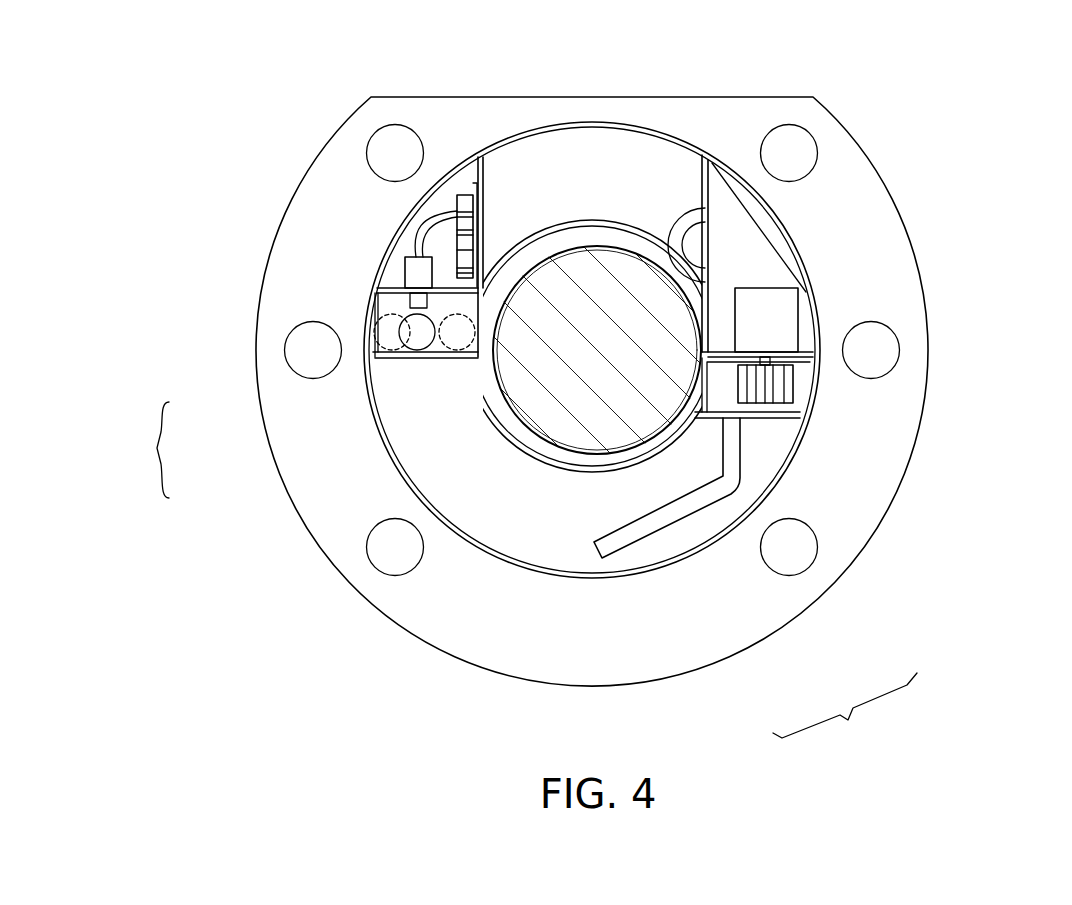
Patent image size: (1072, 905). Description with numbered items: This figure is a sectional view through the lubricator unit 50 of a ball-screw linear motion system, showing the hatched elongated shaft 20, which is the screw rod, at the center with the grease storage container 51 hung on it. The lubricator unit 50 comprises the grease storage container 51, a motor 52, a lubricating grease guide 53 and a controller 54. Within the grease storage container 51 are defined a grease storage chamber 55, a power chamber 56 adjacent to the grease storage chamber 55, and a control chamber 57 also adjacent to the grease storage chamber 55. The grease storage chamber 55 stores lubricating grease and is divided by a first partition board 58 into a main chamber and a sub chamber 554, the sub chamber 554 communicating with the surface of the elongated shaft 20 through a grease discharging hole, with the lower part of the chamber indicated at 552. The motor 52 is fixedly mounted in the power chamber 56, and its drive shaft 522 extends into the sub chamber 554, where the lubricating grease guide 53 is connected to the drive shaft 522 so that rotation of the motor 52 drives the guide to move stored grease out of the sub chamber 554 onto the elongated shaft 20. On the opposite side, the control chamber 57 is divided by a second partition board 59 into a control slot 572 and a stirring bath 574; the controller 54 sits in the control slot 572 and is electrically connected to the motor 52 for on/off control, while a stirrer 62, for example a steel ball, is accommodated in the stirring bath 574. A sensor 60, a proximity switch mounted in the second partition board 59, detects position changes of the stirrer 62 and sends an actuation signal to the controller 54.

The elongated shaft 20 is at (590, 285).
The lubricator unit 50 is at (458, 547).
The grease storage container 51 is at (800, 257).
The motor 52 is at (770, 308).
The drive shaft 522 is at (766, 358).
The lubricating grease guide 53 is at (780, 383).
The controller 54 is at (465, 207).
The grease storage chamber 55 is at (809, 555).
The base portion 552 is at (777, 420).
The sub chamber 554 is at (713, 400).
The power chamber 56 is at (730, 227).
The control chamber 57 is at (296, 425).
The control slot 572 is at (460, 338).
The stirring bath 574 is at (445, 278).
The first partition board 58 is at (760, 458).
The second partition board 59 is at (393, 292).
The sensor 60 is at (412, 267).
The stirrer 62 is at (418, 328).